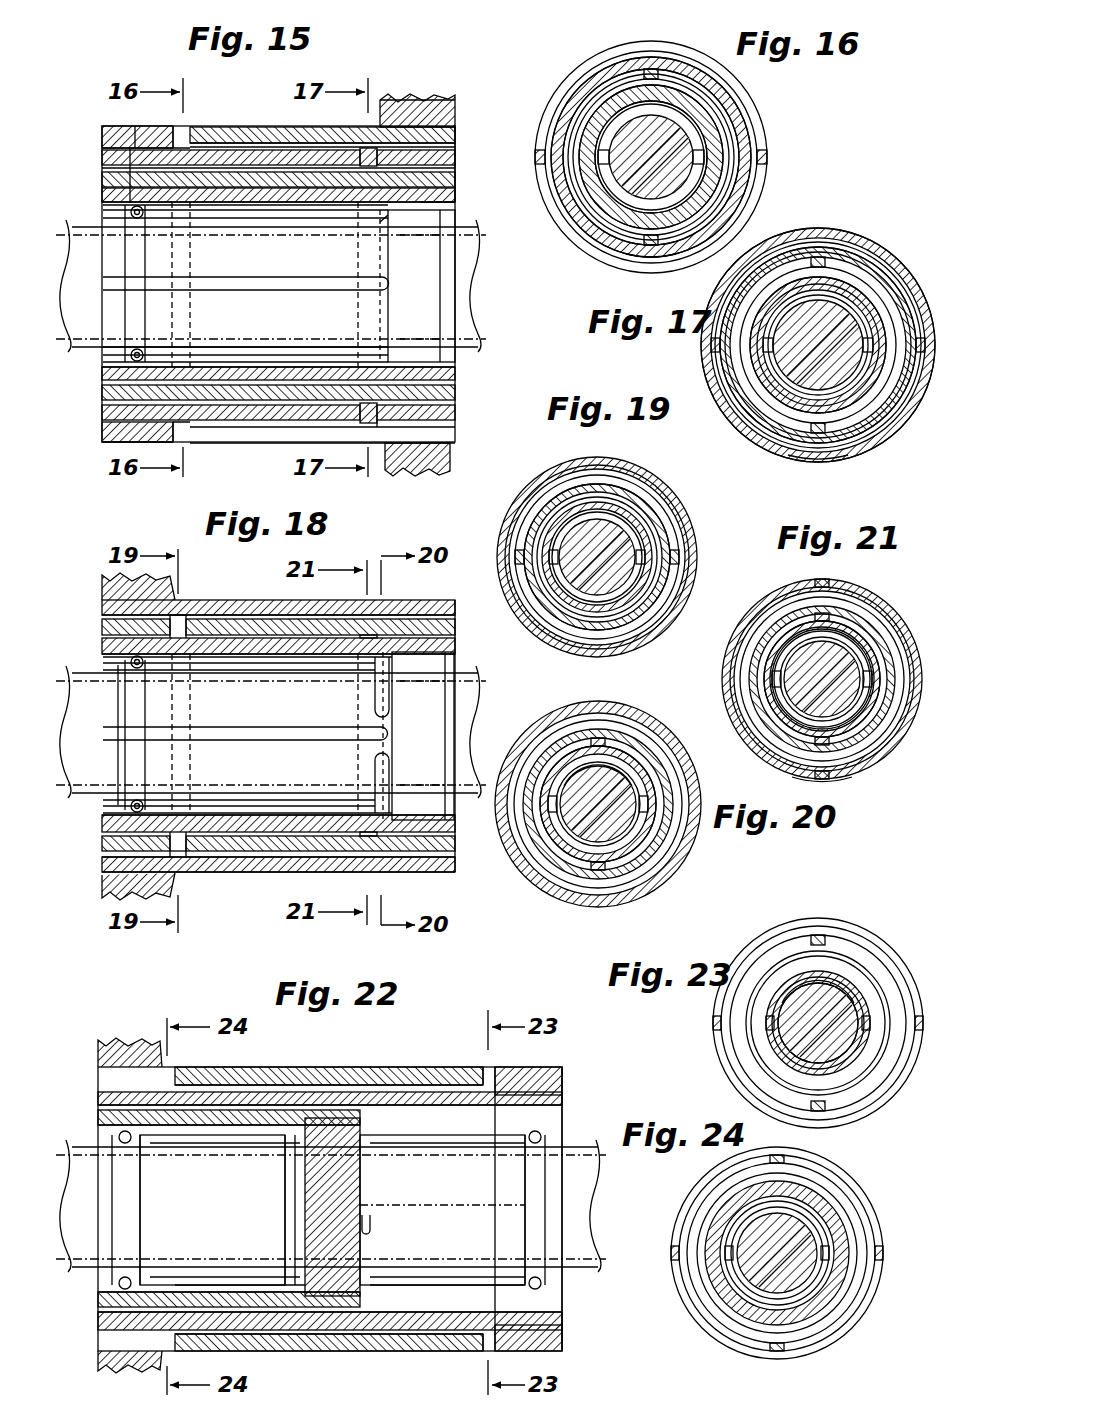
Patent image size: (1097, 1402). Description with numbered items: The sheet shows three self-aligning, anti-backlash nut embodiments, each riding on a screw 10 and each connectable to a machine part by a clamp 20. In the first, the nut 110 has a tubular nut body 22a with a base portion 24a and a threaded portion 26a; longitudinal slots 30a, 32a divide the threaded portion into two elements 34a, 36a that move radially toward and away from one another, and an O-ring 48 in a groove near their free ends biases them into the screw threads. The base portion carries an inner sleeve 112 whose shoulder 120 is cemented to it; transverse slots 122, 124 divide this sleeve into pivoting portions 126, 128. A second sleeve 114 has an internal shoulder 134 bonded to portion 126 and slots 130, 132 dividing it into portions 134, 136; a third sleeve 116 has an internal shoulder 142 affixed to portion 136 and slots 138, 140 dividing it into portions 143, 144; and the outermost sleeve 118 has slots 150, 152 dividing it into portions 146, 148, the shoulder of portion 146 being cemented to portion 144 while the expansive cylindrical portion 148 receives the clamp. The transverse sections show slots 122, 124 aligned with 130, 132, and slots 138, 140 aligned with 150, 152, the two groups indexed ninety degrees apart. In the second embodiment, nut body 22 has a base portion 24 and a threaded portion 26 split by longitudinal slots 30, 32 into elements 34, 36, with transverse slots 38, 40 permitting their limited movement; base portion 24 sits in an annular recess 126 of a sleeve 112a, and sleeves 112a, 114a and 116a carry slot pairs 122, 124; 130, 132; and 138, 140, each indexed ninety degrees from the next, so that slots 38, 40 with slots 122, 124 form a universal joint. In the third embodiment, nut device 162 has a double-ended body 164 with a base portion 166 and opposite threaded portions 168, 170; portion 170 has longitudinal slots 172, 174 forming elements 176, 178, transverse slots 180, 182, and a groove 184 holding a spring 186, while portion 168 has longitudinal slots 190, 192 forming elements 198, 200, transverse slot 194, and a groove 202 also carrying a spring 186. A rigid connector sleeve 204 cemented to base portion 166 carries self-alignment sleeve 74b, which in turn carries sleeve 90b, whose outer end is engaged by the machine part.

In FIG. 15, the shaft 10 is at (465, 340).
In FIG. 16, the shaft 10 is at (653, 207).
In FIG. 17, the shaft 10 is at (844, 386).
In FIG. 18, the shaft 10 is at (452, 793).
In FIG. 19, the shaft 10 is at (636, 539).
In FIG. 20, the shaft 10 is at (598, 804).
In FIG. 21, the shaft 10 is at (782, 698).
In FIG. 22, the shaft 10 is at (583, 1241).
In FIG. 23, the shaft 10 is at (856, 1040).
In FIG. 24, the shaft 10 is at (818, 1255).
In FIG. 15, the clamp (machine part) 20 is at (410, 100).
In FIG. 18, the clamp (machine part) 20 is at (112, 590).
In FIG. 22, the clamp (machine part) 20 is at (128, 1058).
In FIG. 18, the tubular nut body 22 is at (457, 671).
In FIG. 19, the tubular nut body 22 is at (581, 535).
In FIG. 20, the tubular nut body 22 is at (586, 832).
In FIG. 21, the tubular nut body 22 is at (851, 685).
In FIG. 15, the nut body 22a is at (457, 218).
In FIG. 16, the nut body 22a is at (683, 157).
In FIG. 17, the nut body 22a is at (820, 386).
In FIG. 18, the base portion 24 is at (448, 711).
In FIG. 15, the base portion 24a is at (440, 271).
In FIG. 18, the threaded portion 26 is at (102, 669).
In FIG. 15, the threaded portion 26a is at (102, 362).
In FIG. 19, the longitudinal slot 30 is at (561, 557).
In FIG. 20, the longitudinal slot 30 is at (562, 805).
In FIG. 21, the longitudinal slot 30 is at (767, 679).
In FIG. 16, the longitudinal slot 30a is at (606, 153).
In FIG. 17, the longitudinal slot 30a is at (776, 345).
In FIG. 18, the longitudinal slot 32 is at (322, 727).
In FIG. 19, the longitudinal slot 32 is at (648, 546).
In FIG. 20, the longitudinal slot 32 is at (646, 794).
In FIG. 21, the longitudinal slot 32 is at (870, 661).
In FIG. 15, the longitudinal slot 32a is at (285, 275).
In FIG. 16, the longitudinal slot 32a is at (718, 153).
In FIG. 17, the longitudinal slot 32a is at (869, 309).
In FIG. 18, the element 34 is at (222, 723).
In FIG. 19, the element 34 is at (597, 495).
In FIG. 21, the element 34 is at (822, 641).
In FIG. 15, the element 34a is at (345, 265).
In FIG. 16, the element 34a is at (651, 92).
In FIG. 17, the element 34a is at (818, 320).
In FIG. 18, the element 36 is at (245, 755).
In FIG. 19, the element 36 is at (581, 587).
In FIG. 21, the element 36 is at (809, 705).
In FIG. 15, the element 36a is at (300, 312).
In FIG. 16, the element 36a is at (651, 201).
In FIG. 17, the element 36a is at (818, 401).
In FIG. 18, the transverse slot 38 is at (390, 695).
In FIG. 20, the transverse slot 38 is at (598, 774).
In FIG. 18, the transverse slot 40 is at (392, 785).
In FIG. 20, the transverse slot 40 is at (594, 853).
In FIG. 15, the O-ring (coil spring) 48 is at (135, 360).
In FIG. 18, the O-ring (coil spring) 48 is at (130, 808).
In FIG. 22, the first self-alignment sleeve 74b is at (355, 1095).
In FIG. 23, the first self-alignment sleeve 74b is at (825, 998).
In FIG. 24, the first self-alignment sleeve 74b is at (777, 1235).
In FIG. 22, the additional self-alignment sleeve 90b is at (255, 1067).
In FIG. 23, the additional self-alignment sleeve 90b is at (799, 1023).
In FIG. 24, the additional self-alignment sleeve 90b is at (802, 1253).
In FIG. 15, the self-aligning anti-backlash nut 110 is at (338, 75).
In FIG. 16, the self-aligning anti-backlash nut 110 is at (645, 152).
In FIG. 17, the self-aligning anti-backlash nut 110 is at (819, 320).
In FIG. 15, the inner sleeve 112 is at (102, 196).
In FIG. 16, the inner sleeve 112 is at (695, 157).
In FIG. 17, the inner sleeve 112 is at (803, 387).
In FIG. 18, the sleeve 112a is at (102, 646).
In FIG. 19, the sleeve 112a is at (557, 557).
In FIG. 20, the sleeve 112a is at (636, 804).
In FIG. 21, the sleeve 112a is at (792, 679).
In FIG. 15, the second sleeve 114 is at (102, 179).
In FIG. 16, the second sleeve 114 is at (647, 184).
In FIG. 17, the second sleeve 114 is at (806, 361).
In FIG. 18, the second sleeve 114a is at (102, 627).
In FIG. 19, the second sleeve 114a is at (574, 551).
In FIG. 20, the second sleeve 114a is at (631, 804).
In FIG. 21, the second sleeve 114a is at (799, 670).
In FIG. 15, the sleeve 116 is at (102, 160).
In FIG. 16, the sleeve 116 is at (651, 137).
In FIG. 17, the sleeve 116 is at (791, 345).
In FIG. 18, the outer sleeve 116a is at (102, 607).
In FIG. 19, the outer sleeve 116a is at (597, 544).
In FIG. 20, the outer sleeve 116a is at (605, 809).
In FIG. 21, the outer sleeve 116a is at (822, 667).
In FIG. 15, the outermost sleeve 118 is at (102, 133).
In FIG. 16, the outermost sleeve 118 is at (640, 157).
In FIG. 17, the outermost sleeve 118 is at (818, 311).
In FIG. 15, the shoulder 120 is at (392, 208).
In FIG. 15, the transverse slot 122 is at (383, 230).
In FIG. 17, the transverse slot 122 is at (774, 389).
In FIG. 21, the transverse slot 122 is at (802, 621).
In FIG. 17, the transverse slot 124 is at (830, 345).
In FIG. 18, the transverse slot 124 is at (405, 840).
In FIG. 21, the transverse slot 124 is at (839, 679).
In FIG. 15, the portion (annular recess) 126 is at (252, 208).
In FIG. 18, the portion (annular recess) 126 is at (395, 659).
In FIG. 15, the portion 128 is at (450, 190).
In FIG. 16, the transverse slot 130 is at (625, 153).
In FIG. 18, the transverse slot 130 is at (190, 620).
In FIG. 19, the transverse slot 130 is at (583, 530).
In FIG. 16, the transverse slot 132 is at (703, 157).
In FIG. 18, the transverse slot 132 is at (185, 853).
In FIG. 19, the transverse slot 132 is at (597, 566).
In FIG. 15, the internal shoulder 134 is at (135, 150).
In FIG. 15, the portion 136 is at (277, 160).
In FIG. 15, the transverse slot 138 is at (368, 148).
In FIG. 17, the transverse slot 138 is at (818, 331).
In FIG. 18, the transverse slot 138 is at (368, 838).
In FIG. 21, the transverse slot 138 is at (775, 679).
In FIG. 15, the transverse slot 140 is at (372, 428).
In FIG. 17, the transverse slot 140 is at (812, 475).
In FIG. 21, the transverse slot 140 is at (848, 780).
In FIG. 15, the internal shoulder 142 is at (455, 152).
In FIG. 15, the portion 143 is at (440, 108).
In FIG. 15, the portion 144 is at (237, 127).
In FIG. 15, the portion 146 is at (125, 126).
In FIG. 15, the expansive cylindrical portion 148 is at (325, 127).
In FIG. 15, the transverse slot 150 is at (182, 140).
In FIG. 16, the transverse slot 150 is at (651, 140).
In FIG. 15, the transverse slot 152 is at (185, 430).
In FIG. 16, the transverse slot 152 is at (638, 278).
In FIG. 22, the nut device 162 is at (436, 1055).
In FIG. 23, the nut device 162 is at (781, 1023).
In FIG. 24, the nut device 162 is at (792, 1257).
In FIG. 22, the double-ended tubular nut body 164 is at (565, 1135).
In FIG. 22, the base portion 166 is at (310, 1181).
In FIG. 23, the base portion 166 is at (818, 985).
In FIG. 22, the threaded portion 168 is at (250, 1291).
In FIG. 22, the threaded portion 170 is at (430, 1291).
In FIG. 22, the longitudinal slot 172 is at (462, 1201).
In FIG. 23, the longitudinal slot 172 is at (773, 1042).
In FIG. 23, the longitudinal slot 174 is at (860, 962).
In FIG. 22, the element 176 is at (410, 1188).
In FIG. 23, the element 176 is at (820, 981).
In FIG. 22, the element 178 is at (420, 1226).
In FIG. 23, the element 178 is at (841, 1058).
In FIG. 22, the transverse slot 180 is at (370, 1171).
In FIG. 22, the transverse slot 182 is at (368, 1241).
In FIG. 22, the annular groove 184 is at (545, 1191).
In FIG. 22, the spring (O-ring) 186 is at (118, 1285).
In FIG. 24, the longitudinal slot 190 is at (795, 1253).
In FIG. 24, the longitudinal slot 192 is at (754, 1291).
In FIG. 22, the transverse slot 194 is at (300, 1206).
In FIG. 22, the element 198 is at (210, 1195).
In FIG. 24, the element 198 is at (732, 1284).
In FIG. 24, the element 200 is at (813, 1253).
In FIG. 22, the annular groove 202 is at (108, 1185).
In FIG. 22, the rigid connector sleeve 204 is at (270, 1110).
In FIG. 23, the rigid connector sleeve 204 is at (813, 1005).
In FIG. 24, the rigid connector sleeve 204 is at (732, 1253).